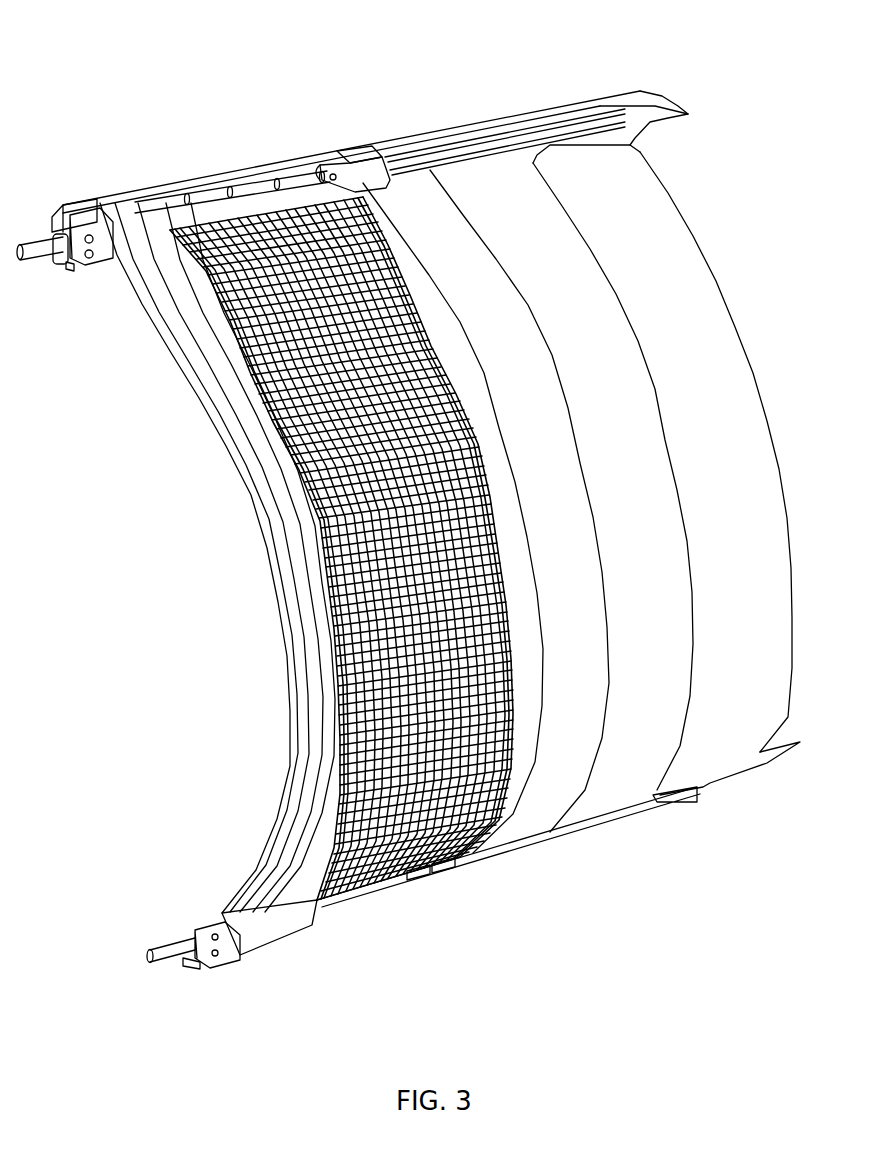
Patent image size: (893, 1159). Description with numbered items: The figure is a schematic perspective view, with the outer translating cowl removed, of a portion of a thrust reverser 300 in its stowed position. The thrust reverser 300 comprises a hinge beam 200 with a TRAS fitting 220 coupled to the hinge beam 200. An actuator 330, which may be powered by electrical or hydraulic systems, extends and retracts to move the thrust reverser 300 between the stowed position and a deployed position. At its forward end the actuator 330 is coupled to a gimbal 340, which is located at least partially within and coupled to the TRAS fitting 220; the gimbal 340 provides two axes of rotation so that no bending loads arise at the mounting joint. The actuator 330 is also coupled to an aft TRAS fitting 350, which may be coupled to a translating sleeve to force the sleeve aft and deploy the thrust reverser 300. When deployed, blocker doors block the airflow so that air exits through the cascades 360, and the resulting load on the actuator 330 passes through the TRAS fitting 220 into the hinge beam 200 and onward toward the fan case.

The thrust reverser 300 is at (462, 68).
The hinge beam 200 is at (273, 157).
The actuator 330 is at (203, 195).
The aft TRAS fitting 350 is at (352, 148).
The gimbal 340 is at (63, 208).
The TRAS fitting 220 is at (107, 253).
The cascades 360 is at (343, 560).